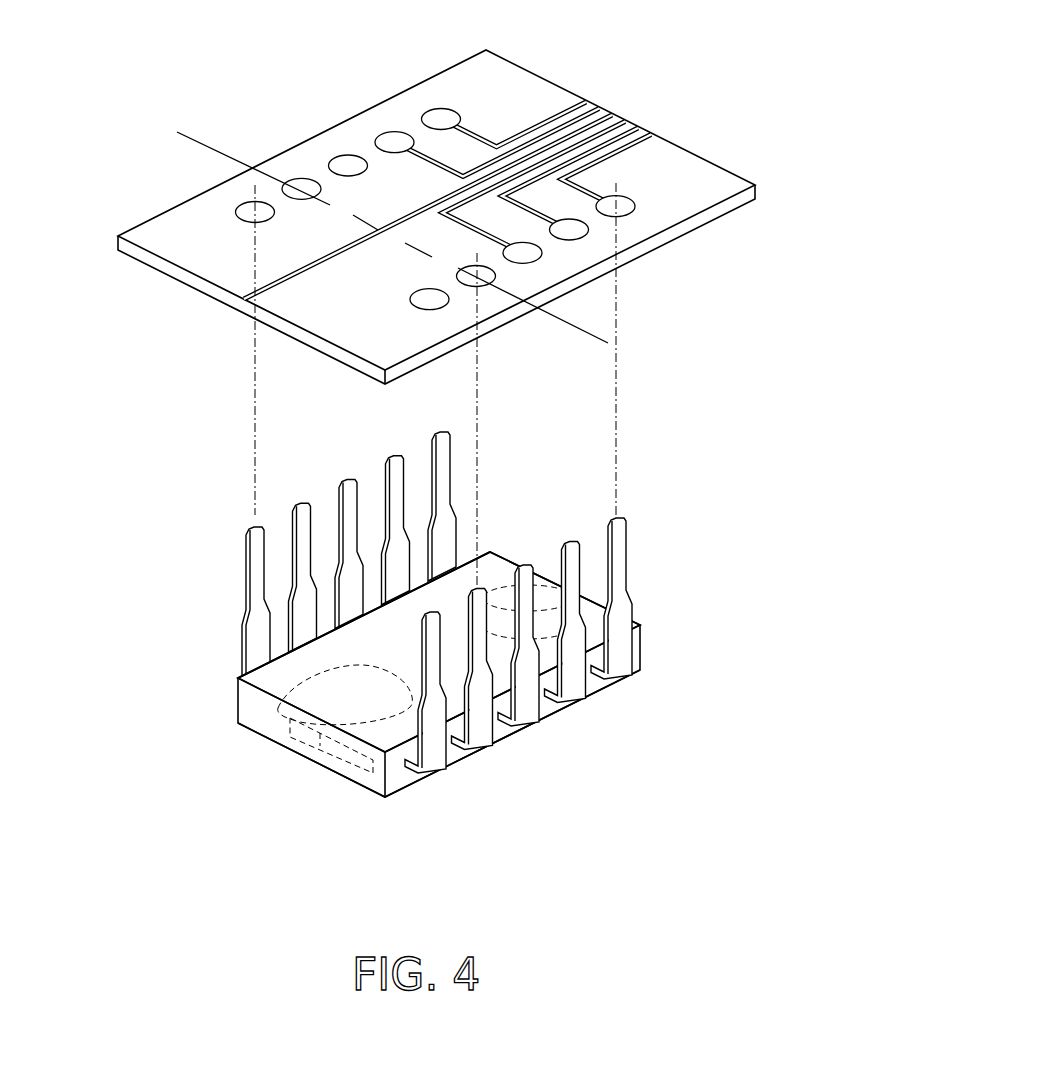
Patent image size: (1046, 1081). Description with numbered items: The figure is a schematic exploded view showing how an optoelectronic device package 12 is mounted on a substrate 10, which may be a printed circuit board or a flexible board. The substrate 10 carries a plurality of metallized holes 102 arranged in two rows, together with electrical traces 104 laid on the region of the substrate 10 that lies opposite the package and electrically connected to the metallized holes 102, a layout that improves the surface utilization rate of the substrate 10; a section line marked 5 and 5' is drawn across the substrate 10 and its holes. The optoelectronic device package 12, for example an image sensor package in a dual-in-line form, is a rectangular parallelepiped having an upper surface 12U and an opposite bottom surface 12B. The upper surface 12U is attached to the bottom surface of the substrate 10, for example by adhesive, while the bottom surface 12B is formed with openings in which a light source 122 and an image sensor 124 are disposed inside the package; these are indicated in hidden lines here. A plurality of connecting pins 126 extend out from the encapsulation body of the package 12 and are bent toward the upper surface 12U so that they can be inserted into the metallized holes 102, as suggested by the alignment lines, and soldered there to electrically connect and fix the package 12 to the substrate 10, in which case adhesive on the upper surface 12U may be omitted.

The substrate 10 is at (228, 297).
The metallized holes 102 is at (446, 116).
The electrical traces 104 is at (597, 108).
The section line 5 is at (266, 194).
The section line 5' is at (533, 331).
The optoelectronic device package 12 is at (205, 520).
The upper surface 12U is at (264, 684).
The bottom surface 12B is at (372, 792).
The light source 122 is at (550, 584).
The image sensor 124 is at (296, 765).
The connecting pins 126 is at (623, 559).